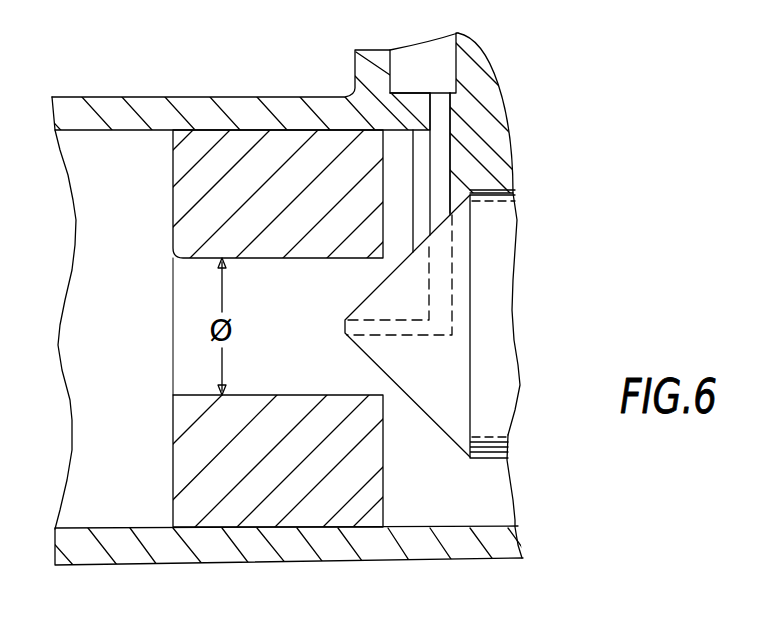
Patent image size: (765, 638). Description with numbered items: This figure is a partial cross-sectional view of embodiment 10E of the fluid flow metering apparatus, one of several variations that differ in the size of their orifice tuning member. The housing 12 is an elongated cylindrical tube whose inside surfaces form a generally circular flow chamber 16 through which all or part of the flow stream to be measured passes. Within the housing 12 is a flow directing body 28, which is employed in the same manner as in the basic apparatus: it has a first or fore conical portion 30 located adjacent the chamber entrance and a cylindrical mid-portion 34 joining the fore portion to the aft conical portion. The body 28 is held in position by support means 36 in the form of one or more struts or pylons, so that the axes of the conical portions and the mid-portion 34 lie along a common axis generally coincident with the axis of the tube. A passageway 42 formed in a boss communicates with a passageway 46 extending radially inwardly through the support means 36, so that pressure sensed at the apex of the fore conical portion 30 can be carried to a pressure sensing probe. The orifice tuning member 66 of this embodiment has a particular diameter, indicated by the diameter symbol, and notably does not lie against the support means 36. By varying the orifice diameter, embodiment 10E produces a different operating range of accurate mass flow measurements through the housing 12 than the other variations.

The housing 12 is at (220, 83).
The passageway 42 is at (435, 75).
The support means 36 is at (500, 101).
The passageway 46 is at (440, 162).
The first conical portion 30 is at (462, 243).
The cylindrical mid-portion 34 is at (498, 297).
The flow directing body 28 is at (536, 358).
The fluid flow metering apparatus embodiment 10E is at (545, 506).
The flow chamber 16 is at (117, 503).
The orifice tuning member 66 is at (267, 507).